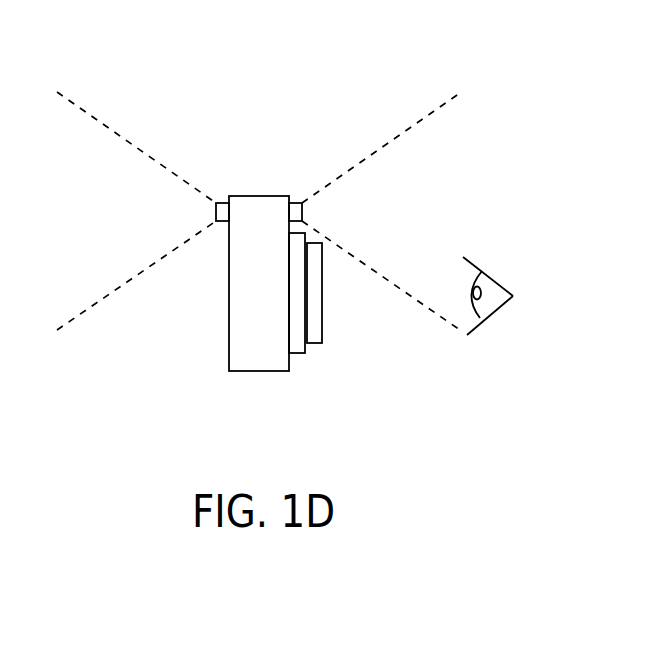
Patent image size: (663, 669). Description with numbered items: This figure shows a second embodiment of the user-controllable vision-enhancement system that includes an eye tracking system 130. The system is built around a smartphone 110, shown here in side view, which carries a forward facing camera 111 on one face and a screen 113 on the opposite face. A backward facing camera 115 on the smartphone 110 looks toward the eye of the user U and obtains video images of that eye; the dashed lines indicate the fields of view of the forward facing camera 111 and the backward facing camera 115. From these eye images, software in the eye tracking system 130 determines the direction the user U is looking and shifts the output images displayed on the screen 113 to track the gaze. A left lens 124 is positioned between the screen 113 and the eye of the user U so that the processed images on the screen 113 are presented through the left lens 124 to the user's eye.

The smartphone 110 is at (260, 58).
The forward facing camera 111 is at (224, 203).
The backward facing camera 115 is at (296, 203).
The screen 113 is at (306, 353).
The left lens 124 is at (322, 343).
The eye tracking system 130 is at (394, 87).
The user U is at (507, 236).